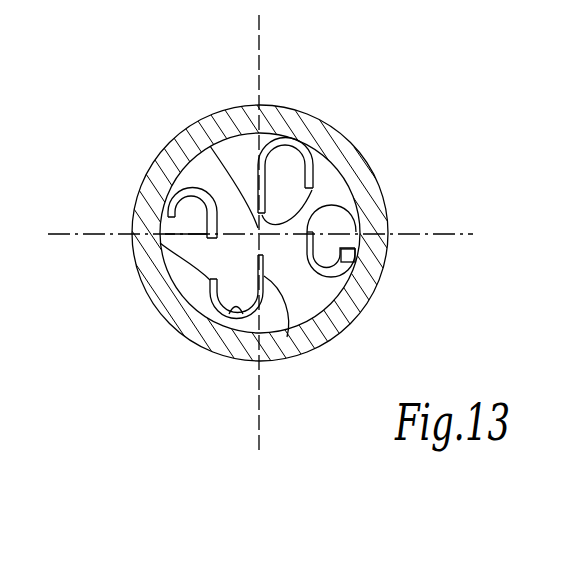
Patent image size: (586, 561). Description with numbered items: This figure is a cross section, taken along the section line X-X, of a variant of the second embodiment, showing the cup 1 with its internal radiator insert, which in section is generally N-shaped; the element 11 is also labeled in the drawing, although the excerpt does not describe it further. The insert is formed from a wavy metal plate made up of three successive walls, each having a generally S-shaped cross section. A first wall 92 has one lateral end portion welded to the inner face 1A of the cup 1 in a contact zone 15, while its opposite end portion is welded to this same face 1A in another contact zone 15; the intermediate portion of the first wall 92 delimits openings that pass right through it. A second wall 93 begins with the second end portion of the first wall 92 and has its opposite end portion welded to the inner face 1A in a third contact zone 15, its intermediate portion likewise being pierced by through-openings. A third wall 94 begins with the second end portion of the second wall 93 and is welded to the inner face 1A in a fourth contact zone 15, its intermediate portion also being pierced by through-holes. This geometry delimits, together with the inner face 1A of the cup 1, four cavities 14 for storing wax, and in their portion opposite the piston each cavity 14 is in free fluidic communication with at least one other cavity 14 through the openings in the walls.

The cup 1 is at (222, 106).
The inner face of the cup 1A is at (245, 153).
The sheath 11 is at (194, 132).
The section plane X-X is at (168, 158).
The contact zone 15 is at (261, 231).
The cavity 14 is at (258, 350).
The third wall 94 is at (347, 148).
The first wall 92 is at (149, 295).
The second wall 93 is at (299, 359).